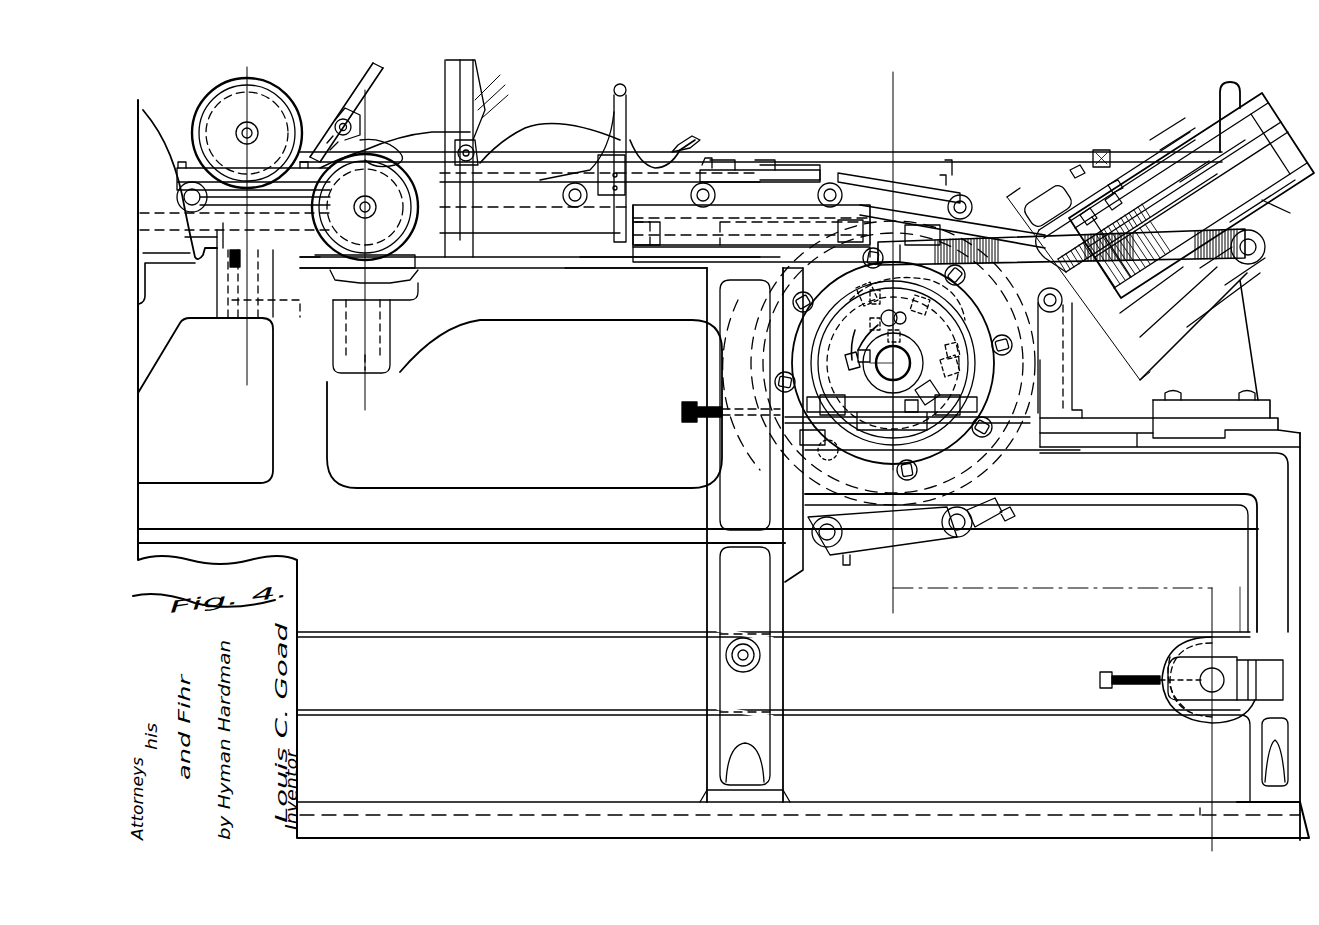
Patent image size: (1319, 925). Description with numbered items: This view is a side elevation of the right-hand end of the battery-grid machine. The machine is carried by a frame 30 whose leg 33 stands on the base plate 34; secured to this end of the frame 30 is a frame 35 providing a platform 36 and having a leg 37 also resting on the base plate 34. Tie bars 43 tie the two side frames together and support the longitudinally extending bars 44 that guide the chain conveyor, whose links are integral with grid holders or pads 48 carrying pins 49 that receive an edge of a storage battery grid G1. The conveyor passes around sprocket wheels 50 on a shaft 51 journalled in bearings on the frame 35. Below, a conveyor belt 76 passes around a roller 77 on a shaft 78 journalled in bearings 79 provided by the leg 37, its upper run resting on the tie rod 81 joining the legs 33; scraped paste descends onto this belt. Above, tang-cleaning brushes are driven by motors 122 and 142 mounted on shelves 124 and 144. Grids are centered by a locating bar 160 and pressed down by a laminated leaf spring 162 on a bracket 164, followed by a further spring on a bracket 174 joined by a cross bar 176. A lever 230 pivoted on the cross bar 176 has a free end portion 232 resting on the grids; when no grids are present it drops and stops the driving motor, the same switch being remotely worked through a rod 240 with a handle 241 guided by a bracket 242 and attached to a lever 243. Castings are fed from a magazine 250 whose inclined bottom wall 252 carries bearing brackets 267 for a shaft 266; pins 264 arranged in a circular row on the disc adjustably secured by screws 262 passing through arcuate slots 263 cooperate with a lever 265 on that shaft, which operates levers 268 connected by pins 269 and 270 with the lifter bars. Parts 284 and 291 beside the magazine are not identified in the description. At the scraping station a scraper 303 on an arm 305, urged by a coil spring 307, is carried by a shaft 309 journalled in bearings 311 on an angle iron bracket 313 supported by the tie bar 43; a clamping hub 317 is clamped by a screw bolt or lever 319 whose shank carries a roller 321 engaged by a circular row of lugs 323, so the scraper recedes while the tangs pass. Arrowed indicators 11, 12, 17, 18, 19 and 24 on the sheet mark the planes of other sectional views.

The section line 11 is at (265, 380).
The section line 12 is at (380, 406).
The section line 17 is at (1236, 847).
The section line 18 is at (1147, 368).
The view arrow 19 is at (1125, 130).
The section line 24 is at (855, 613).
The frame 30 is at (540, 545).
The leg 33 is at (712, 750).
The base plate 34 is at (552, 802).
The frame 35 is at (1110, 487).
The platform 36 is at (800, 432).
The leg 37 is at (1258, 560).
The tie bar 43 is at (720, 262).
The longitudinally extending bar 44 is at (775, 205).
The grid holder or pad 48 is at (742, 168).
The pin 49 is at (835, 168).
The sprocket wheel 50 is at (740, 310).
The shaft 51 is at (885, 365).
The conveyor belt 76 is at (935, 655).
The roller 77 is at (1178, 697).
The shaft 78 is at (1208, 690).
The bearing 79 is at (1200, 660).
The tie rod 81 is at (725, 655).
The electric motor 122 is at (422, 265).
The shelf 124 is at (418, 295).
The motor 142 is at (215, 100).
The shelf 144 is at (195, 205).
The locating bar 160 is at (614, 95).
The laminated leaf spring member 162 is at (438, 130).
The bracket 164 is at (488, 110).
The bracket 174 is at (365, 78).
The cross bar 176 is at (340, 115).
The lever 230 is at (545, 145).
The free end portion 232 is at (665, 160).
The rod 240 is at (803, 152).
The handle 241 is at (1218, 92).
The bracket 242 is at (1100, 148).
The lever 243 is at (480, 140).
The magazine 250 is at (1312, 101).
The inclined bottom wall 252 is at (1280, 198).
The screw 262 is at (860, 312).
The arcuate slot 263 is at (908, 318).
The pin 264 is at (932, 404).
The lever 265 is at (1000, 345).
The shaft 266 is at (1262, 258).
The bearing bracket 267 is at (1290, 209).
The lever 268 is at (1212, 295).
The pin 269 is at (1170, 340).
The pin 270 is at (1125, 345).
The tilted bar 284 is at (930, 207).
The bracket 291 is at (1060, 192).
The scraper 303 is at (605, 200).
The arm 305 is at (627, 108).
The coil spring 307 is at (627, 90).
The shaft 309 is at (745, 222).
The bearing 311 is at (652, 222).
The angle iron bracket 313 is at (650, 257).
The clamping hub 317 is at (927, 232).
The screw bolt or lever 319 is at (1061, 230).
The roller 321 is at (907, 303).
The lug 323 is at (912, 309).
The grid G1 is at (706, 160).